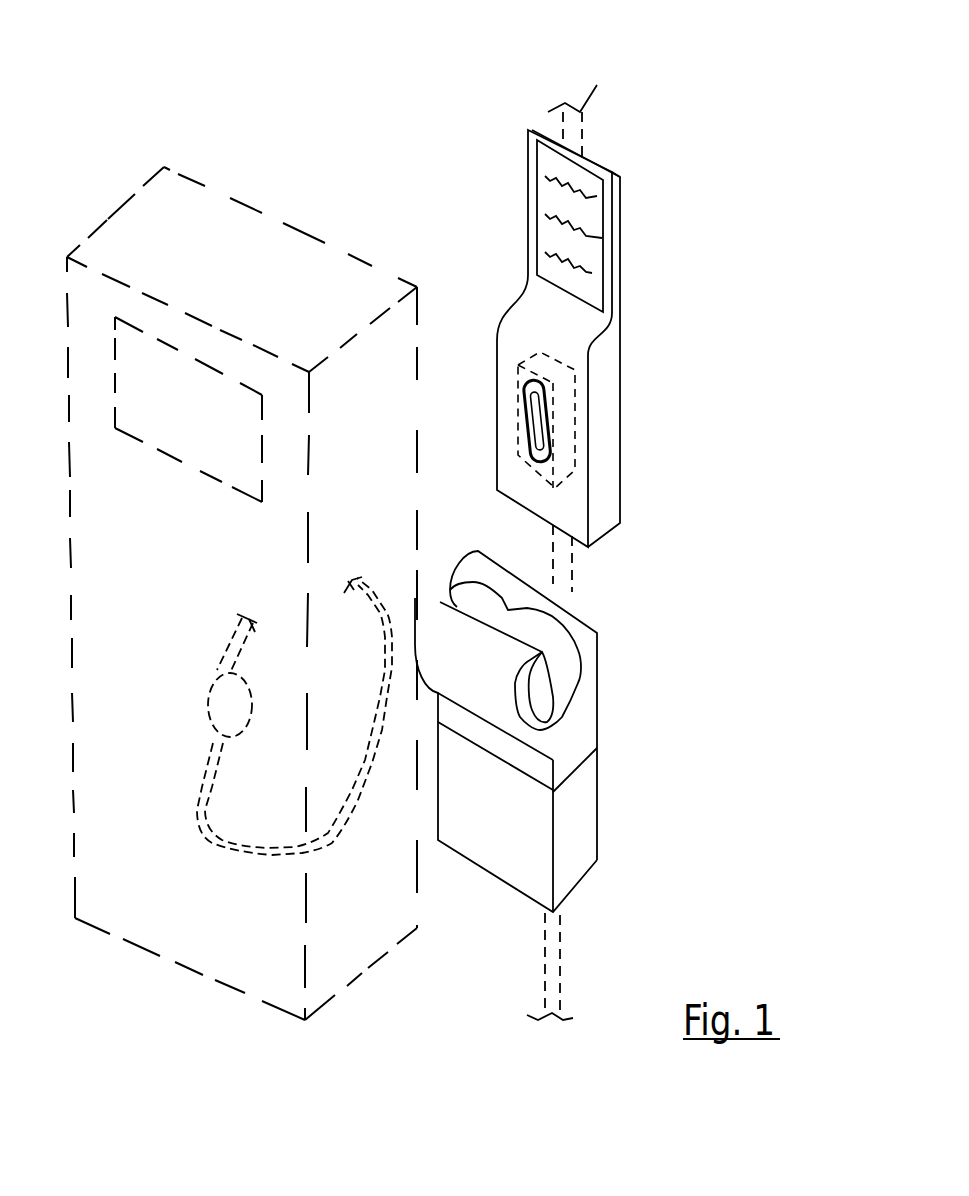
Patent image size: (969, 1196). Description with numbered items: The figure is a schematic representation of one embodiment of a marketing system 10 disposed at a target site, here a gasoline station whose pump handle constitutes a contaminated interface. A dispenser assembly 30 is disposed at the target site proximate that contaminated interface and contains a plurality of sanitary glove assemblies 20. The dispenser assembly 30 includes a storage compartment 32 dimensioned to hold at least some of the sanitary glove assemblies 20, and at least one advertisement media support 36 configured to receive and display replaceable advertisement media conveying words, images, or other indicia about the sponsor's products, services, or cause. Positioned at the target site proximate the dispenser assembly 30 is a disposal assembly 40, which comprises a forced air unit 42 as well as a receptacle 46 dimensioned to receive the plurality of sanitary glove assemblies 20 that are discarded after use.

The marketing system 10 is at (318, 76).
The sanitary glove assembly 20 is at (487, 403).
The dispenser assembly 30 is at (624, 552).
The storage compartment 32 is at (622, 462).
The advertisement media support 36 is at (622, 224).
The disposal assembly 40 is at (569, 731).
The forced air unit 42 is at (605, 636).
The receptacle 46 is at (603, 850).